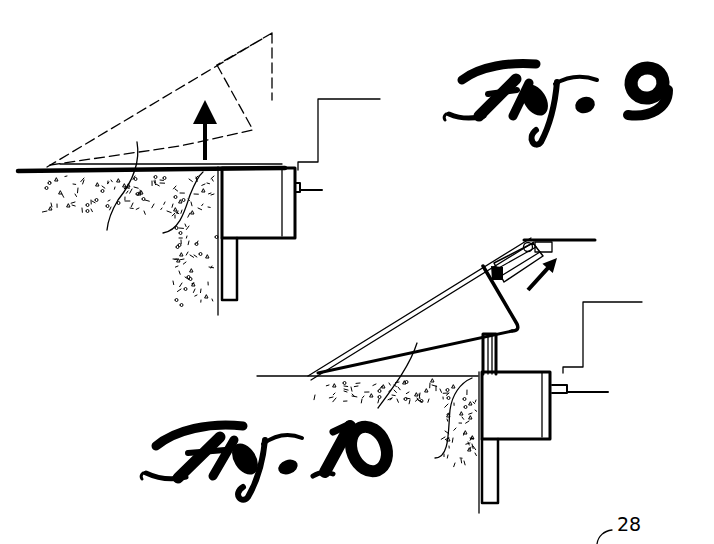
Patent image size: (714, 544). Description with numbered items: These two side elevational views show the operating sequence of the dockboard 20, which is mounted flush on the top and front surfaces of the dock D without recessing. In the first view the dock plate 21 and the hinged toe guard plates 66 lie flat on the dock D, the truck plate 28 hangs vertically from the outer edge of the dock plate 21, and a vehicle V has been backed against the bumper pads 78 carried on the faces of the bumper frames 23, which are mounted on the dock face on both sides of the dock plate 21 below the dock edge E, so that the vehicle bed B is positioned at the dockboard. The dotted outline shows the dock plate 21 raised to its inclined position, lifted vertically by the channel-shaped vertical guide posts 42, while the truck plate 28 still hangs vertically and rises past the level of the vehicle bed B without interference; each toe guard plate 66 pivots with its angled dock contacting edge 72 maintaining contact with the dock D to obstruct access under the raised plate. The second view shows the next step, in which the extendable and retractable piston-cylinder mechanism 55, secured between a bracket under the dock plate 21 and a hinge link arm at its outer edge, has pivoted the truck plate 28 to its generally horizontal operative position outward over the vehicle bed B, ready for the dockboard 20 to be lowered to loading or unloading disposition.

In FIG. 9, the dockboard 20 is at (164, 165).
In FIG. 10, the dockboard 20 is at (447, 268).
In FIG. 9, the dock plate 21 is at (112, 168).
In FIG. 10, the dock plate 21 is at (384, 318).
In FIG. 9, the bumper frame 23 is at (262, 227).
In FIG. 10, the bumper frame 23 is at (507, 428).
In FIG. 10, the truck plate 28 is at (570, 236).
In FIG. 9, the vertical guide post 42 is at (237, 280).
In FIG. 10, the vertical guide post 42 is at (497, 349).
In FIG. 10, the piston-cylinder mechanism 55 is at (508, 274).
In FIG. 9, the toe guard plate 66 is at (114, 200).
In FIG. 10, the toe guard plate 66 is at (397, 381).
In FIG. 10, the dock contacting edge 72 is at (433, 360).
In FIG. 9, the bumper pad 78 is at (296, 205).
In FIG. 10, the bumper pad 78 is at (553, 410).
In FIG. 9, the vehicle bed B is at (340, 97).
In FIG. 10, the vehicle bed B is at (600, 297).
In FIG. 9, the vehicle V is at (356, 147).
In FIG. 10, the vehicle V is at (616, 349).
In FIG. 9, the dock D is at (68, 225).
In FIG. 10, the dock D is at (300, 403).
In FIG. 9, the dock edge E is at (175, 211).
In FIG. 10, the dock edge E is at (445, 426).